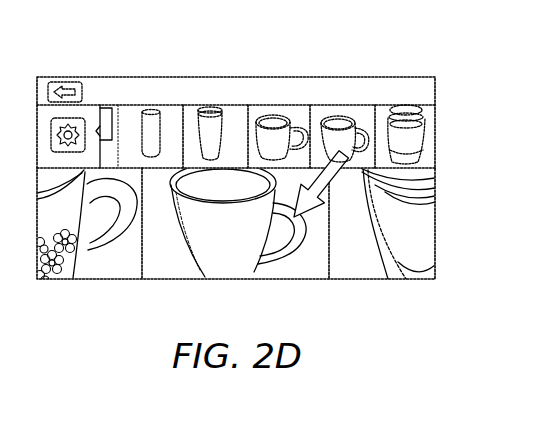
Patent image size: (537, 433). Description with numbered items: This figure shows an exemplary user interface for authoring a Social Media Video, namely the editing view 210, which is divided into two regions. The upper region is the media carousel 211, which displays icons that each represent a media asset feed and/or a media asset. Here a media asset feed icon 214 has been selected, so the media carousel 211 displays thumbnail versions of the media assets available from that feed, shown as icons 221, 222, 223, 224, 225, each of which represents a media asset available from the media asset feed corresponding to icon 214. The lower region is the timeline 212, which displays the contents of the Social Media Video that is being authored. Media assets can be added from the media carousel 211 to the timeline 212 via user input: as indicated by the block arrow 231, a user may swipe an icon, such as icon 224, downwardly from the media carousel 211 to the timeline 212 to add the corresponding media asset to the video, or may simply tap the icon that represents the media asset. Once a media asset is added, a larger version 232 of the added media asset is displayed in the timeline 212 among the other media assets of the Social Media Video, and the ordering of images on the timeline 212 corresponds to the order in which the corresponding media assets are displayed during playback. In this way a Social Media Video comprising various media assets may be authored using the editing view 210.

The editing view 210 is at (430, 57).
The media carousel 211 is at (440, 130).
The timeline 212 is at (438, 226).
The icon 214 is at (88, 112).
The icon 221 is at (148, 108).
The icon 222 is at (208, 107).
The icon 223 is at (274, 107).
The icon 224 is at (337, 107).
The icon 225 is at (397, 105).
The block arrow 231 is at (305, 205).
The larger version of the added media asset 232 is at (297, 260).